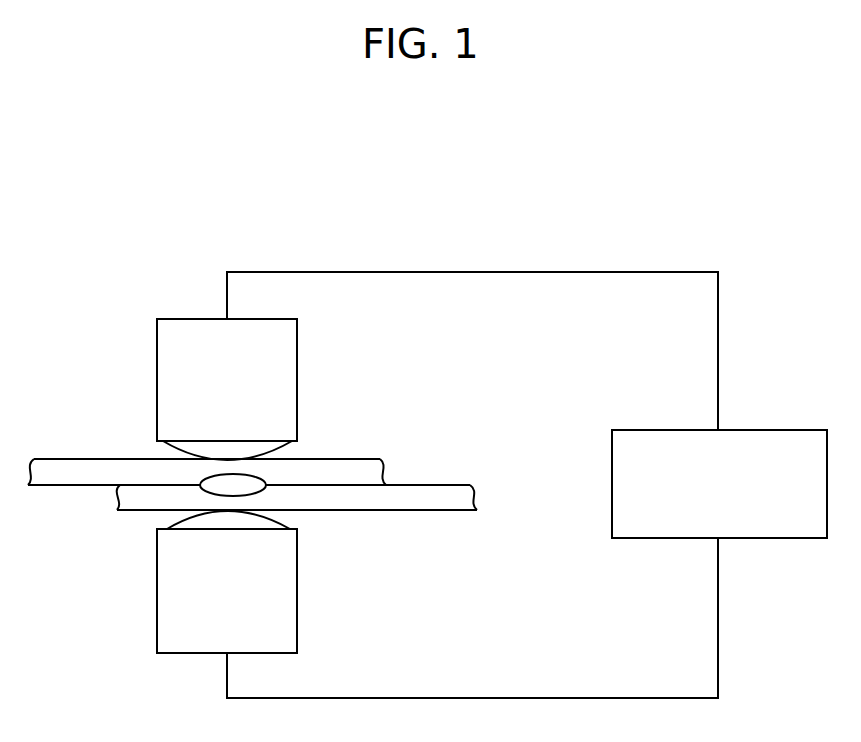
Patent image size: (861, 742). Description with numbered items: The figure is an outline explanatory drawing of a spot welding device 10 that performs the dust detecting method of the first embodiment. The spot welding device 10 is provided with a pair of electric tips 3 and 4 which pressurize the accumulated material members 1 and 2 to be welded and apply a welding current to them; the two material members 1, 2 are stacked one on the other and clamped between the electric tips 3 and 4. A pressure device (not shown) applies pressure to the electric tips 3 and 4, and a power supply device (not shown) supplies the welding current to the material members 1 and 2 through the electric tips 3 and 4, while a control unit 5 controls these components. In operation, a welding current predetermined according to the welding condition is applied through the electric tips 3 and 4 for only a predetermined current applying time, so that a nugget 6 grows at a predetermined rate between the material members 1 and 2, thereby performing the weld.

The material member 1 is at (87, 459).
The material member 2 is at (117, 512).
The electric tip 3 is at (298, 379).
The electric tip 4 is at (298, 576).
The control unit 5 is at (779, 430).
The nugget 6 is at (245, 483).
The spot welding device 10 is at (537, 205).